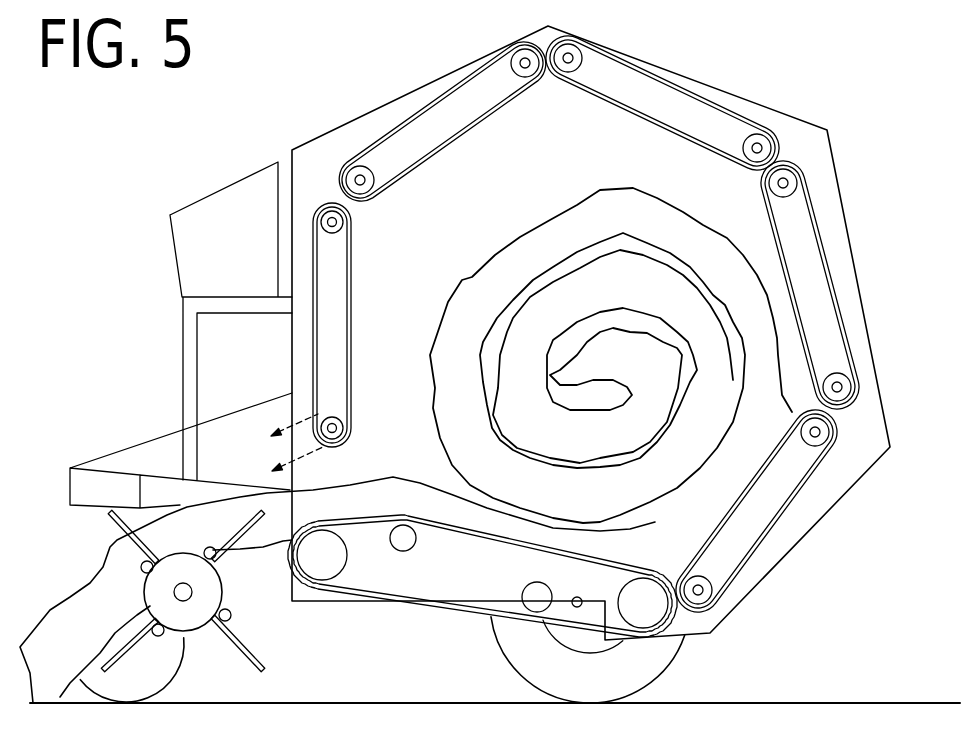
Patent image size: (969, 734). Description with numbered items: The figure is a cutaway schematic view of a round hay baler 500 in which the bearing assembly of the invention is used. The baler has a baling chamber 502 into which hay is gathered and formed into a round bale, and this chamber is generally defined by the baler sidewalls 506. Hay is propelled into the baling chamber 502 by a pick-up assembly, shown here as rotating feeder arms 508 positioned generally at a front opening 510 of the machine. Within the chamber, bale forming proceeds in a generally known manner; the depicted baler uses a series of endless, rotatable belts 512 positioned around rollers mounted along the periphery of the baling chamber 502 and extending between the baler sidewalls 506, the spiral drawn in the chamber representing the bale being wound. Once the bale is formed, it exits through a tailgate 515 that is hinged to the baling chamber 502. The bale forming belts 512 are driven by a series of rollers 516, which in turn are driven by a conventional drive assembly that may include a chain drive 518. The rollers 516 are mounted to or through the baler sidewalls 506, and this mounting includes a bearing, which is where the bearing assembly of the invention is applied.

The round hay baler 500 is at (350, 121).
The baling chamber 502 is at (493, 150).
The baler sidewalls 506 is at (418, 247).
The rotating feeder arms 508 is at (112, 541).
The front opening 510 is at (283, 540).
The endless rotatable belts 512 is at (753, 118).
The tailgate 515 is at (818, 487).
The rollers 516 is at (779, 185).
The chain drive 518 is at (277, 439).